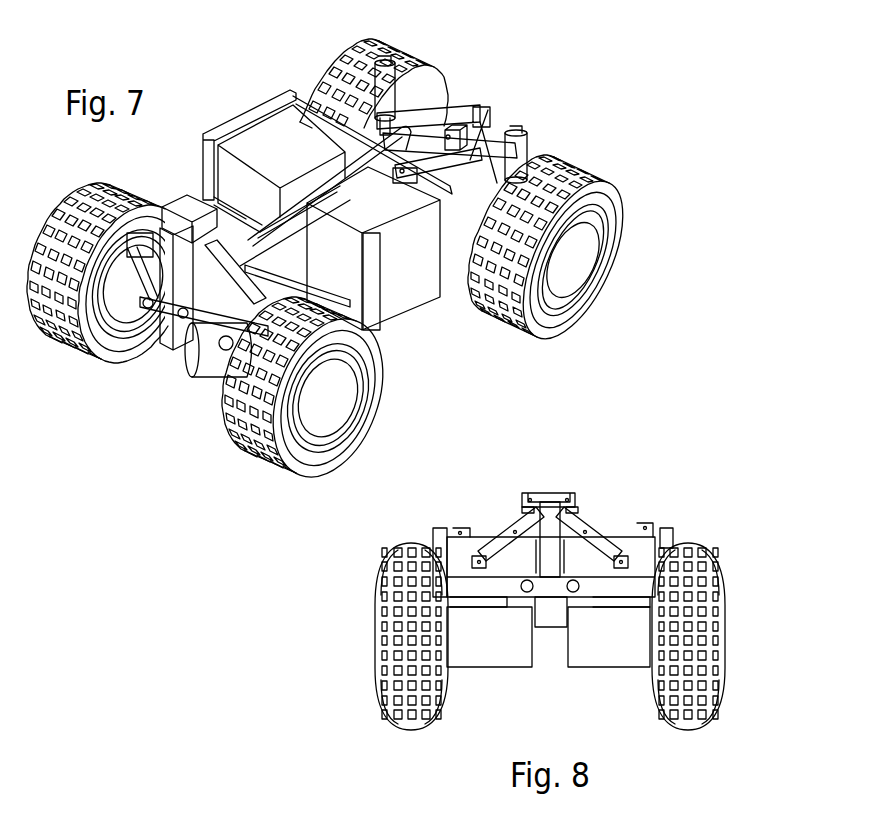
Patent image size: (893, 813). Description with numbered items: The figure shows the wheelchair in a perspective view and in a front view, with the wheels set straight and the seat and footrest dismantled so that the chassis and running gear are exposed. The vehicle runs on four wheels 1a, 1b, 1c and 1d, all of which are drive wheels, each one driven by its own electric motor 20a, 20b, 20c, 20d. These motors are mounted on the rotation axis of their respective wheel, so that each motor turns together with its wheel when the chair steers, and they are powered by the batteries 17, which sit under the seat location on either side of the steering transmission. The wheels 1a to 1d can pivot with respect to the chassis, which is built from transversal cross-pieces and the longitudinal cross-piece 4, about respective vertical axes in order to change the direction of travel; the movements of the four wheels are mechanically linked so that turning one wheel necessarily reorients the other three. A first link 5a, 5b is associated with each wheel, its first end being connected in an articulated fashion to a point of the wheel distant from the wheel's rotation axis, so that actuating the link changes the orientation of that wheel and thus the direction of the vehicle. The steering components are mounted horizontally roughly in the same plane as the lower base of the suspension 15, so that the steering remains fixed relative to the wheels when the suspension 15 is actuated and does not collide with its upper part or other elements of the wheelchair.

In FIG. 7, the wheel 1a is at (610, 217).
In FIG. 8, the wheel 1a is at (384, 710).
In FIG. 7, the wheel 1b is at (313, 64).
In FIG. 8, the wheel 1b is at (713, 707).
In FIG. 7, the wheel 1c is at (283, 447).
In FIG. 7, the wheel 1d is at (85, 330).
In FIG. 8, the longitudinal cross-piece 4 is at (550, 613).
In FIG. 7, the first link 5a is at (485, 170).
In FIG. 7, the first link 5b is at (384, 126).
In FIG. 8, the suspension 15 is at (588, 524).
In FIG. 7, the batteries 17 is at (286, 162).
In FIG. 8, the electric motor 20a is at (517, 656).
In FIG. 8, the electric motor 20b is at (644, 656).
In FIG. 7, the electric motor 20c is at (212, 356).
In FIG. 7, the electric motor 20d is at (150, 318).